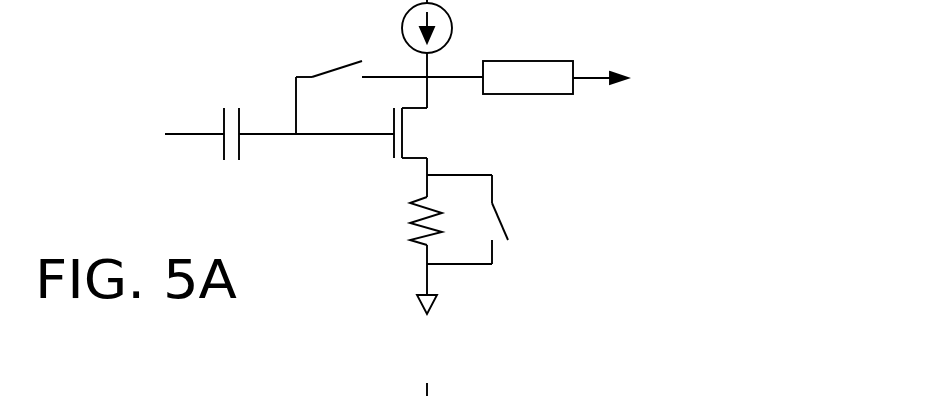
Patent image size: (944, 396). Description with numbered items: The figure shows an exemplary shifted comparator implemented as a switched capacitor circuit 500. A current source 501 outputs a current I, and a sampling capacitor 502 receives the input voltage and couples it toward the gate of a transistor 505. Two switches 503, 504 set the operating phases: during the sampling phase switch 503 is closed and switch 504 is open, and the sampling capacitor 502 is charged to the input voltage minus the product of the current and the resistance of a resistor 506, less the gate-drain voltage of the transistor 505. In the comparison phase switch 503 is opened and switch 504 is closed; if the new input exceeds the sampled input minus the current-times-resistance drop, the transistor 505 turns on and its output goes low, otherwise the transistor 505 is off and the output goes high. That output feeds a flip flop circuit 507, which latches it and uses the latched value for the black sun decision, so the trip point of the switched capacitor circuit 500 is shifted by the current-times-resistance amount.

The switched capacitor circuit 500 is at (143, 74).
The current source 501 is at (452, 20).
The sampling capacitor 502 is at (240, 117).
The switch 503 is at (332, 70).
The switch 504 is at (500, 212).
The transistor 505 is at (418, 133).
The resistor 506 is at (410, 221).
The flip flop circuit 507 is at (532, 94).